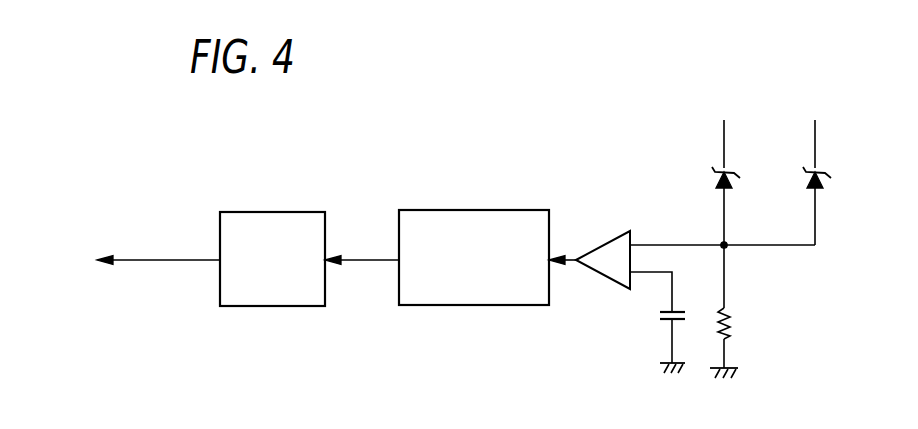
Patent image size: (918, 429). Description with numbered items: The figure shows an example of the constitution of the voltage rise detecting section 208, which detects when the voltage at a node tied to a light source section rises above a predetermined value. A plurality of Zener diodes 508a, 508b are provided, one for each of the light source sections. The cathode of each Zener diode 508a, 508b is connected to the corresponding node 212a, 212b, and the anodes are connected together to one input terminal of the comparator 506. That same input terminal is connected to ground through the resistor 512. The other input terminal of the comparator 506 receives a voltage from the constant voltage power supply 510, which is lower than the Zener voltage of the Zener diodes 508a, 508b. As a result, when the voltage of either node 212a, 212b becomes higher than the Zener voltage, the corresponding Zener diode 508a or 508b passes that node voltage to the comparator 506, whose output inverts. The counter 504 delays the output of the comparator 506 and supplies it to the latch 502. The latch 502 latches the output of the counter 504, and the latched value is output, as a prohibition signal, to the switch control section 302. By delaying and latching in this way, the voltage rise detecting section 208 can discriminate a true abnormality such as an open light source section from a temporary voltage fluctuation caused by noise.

The voltage rise detecting section 208 is at (644, 84).
The switch control section 302 is at (131, 244).
The latch 502 is at (272, 211).
The counter 504 is at (477, 210).
The comparator 506 is at (608, 239).
The node 212a is at (727, 131).
The node 212b is at (818, 131).
The Zener diode 508a is at (731, 171).
The Zener diode 508b is at (822, 171).
The constant voltage power supply 510 is at (660, 317).
The resistor 512 is at (731, 318).